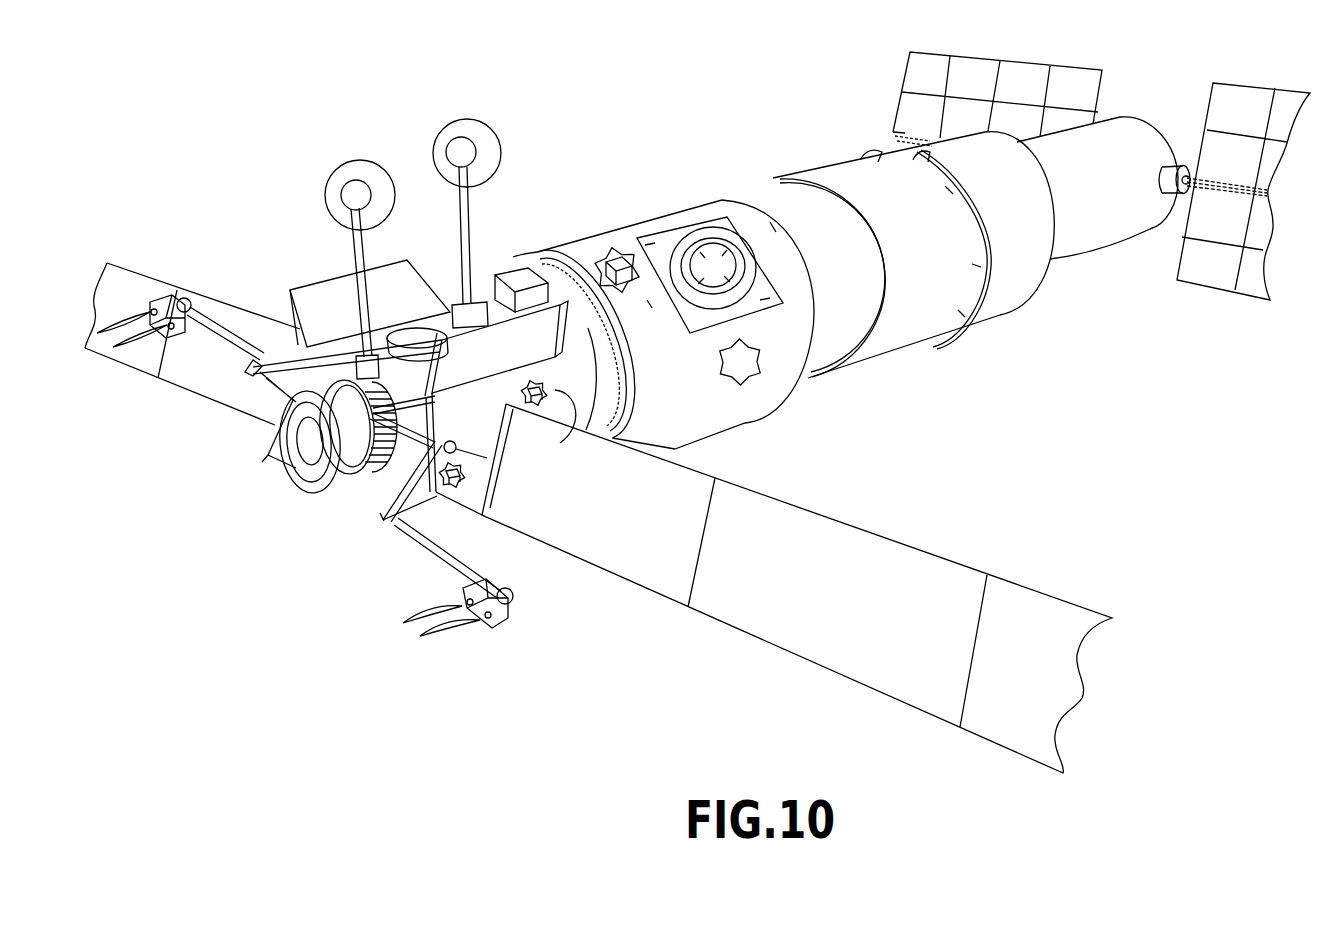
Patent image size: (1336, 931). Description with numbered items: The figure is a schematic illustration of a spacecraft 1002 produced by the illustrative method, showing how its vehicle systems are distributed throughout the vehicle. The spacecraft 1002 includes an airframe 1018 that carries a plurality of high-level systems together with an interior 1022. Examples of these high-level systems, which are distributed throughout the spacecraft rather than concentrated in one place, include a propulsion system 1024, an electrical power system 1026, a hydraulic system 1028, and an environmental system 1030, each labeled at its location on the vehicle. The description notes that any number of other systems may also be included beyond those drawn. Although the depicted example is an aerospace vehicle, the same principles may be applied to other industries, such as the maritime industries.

The spacecraft 1002 is at (911, 250).
The airframe 1018 is at (440, 300).
The interior 1022 is at (745, 366).
The propulsion system 1024 is at (418, 598).
The electrical power system 1026 is at (486, 518).
The hydraulic system 1028 is at (665, 458).
The environmental system 1030 is at (607, 258).